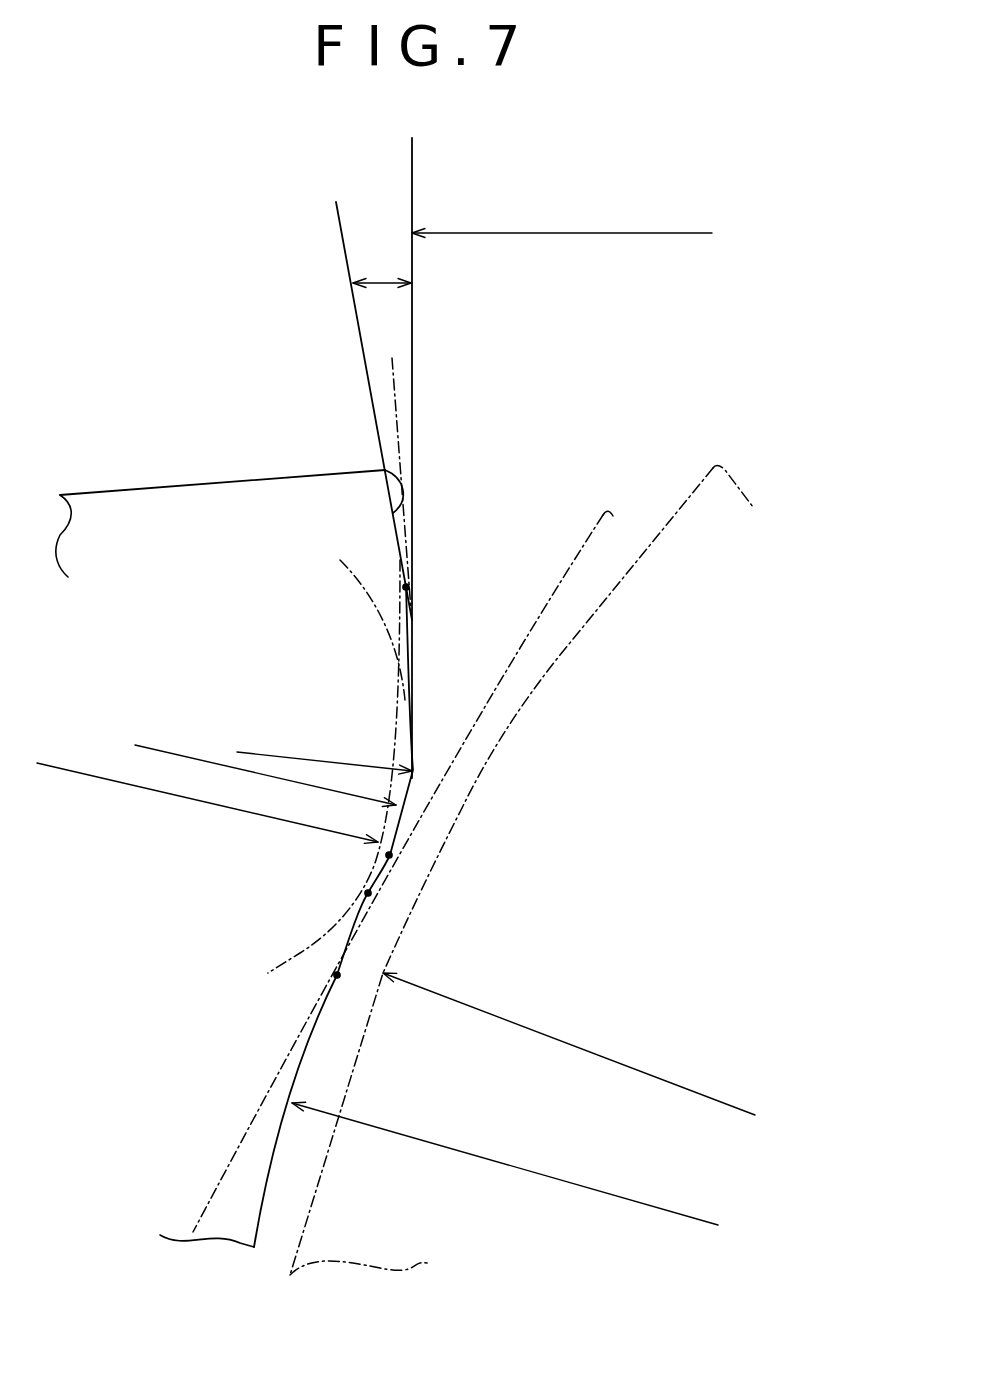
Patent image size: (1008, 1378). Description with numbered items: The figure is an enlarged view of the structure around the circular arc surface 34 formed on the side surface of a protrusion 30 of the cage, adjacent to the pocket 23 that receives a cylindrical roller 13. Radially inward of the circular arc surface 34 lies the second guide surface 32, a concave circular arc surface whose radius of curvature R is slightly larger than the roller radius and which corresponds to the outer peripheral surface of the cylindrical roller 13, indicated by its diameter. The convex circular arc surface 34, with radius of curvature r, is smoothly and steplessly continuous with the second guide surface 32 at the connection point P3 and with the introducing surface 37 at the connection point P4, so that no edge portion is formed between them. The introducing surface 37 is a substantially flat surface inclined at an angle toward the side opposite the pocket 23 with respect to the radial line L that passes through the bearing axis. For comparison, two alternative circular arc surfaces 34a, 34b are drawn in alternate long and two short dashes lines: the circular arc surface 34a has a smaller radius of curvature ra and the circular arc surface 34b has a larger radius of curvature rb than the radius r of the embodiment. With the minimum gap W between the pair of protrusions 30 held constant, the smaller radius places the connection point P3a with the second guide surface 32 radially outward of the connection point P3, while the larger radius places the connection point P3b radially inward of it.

The cylindrical roller 13 is at (690, 493).
The pocket 23 is at (600, 453).
The protrusion 30 is at (220, 527).
The second guide surface 32 is at (300, 1070).
The circular arc surface 34 is at (410, 790).
The circular arc surface 34a is at (415, 775).
The circular arc surface 34b is at (380, 875).
The introducing surface 37 is at (375, 471).
The connection point P3 is at (368, 893).
The connection point P3a is at (389, 855).
The connection point P3b is at (337, 975).
The connection point P4 is at (404, 585).
The radial line L is at (412, 188).
The minimum gap W is at (562, 222).
The radius of curvature R is at (505, 1163).
The radius of curvature r is at (265, 770).
The radius of curvature ra is at (324, 754).
The radius of curvature rb is at (207, 795).